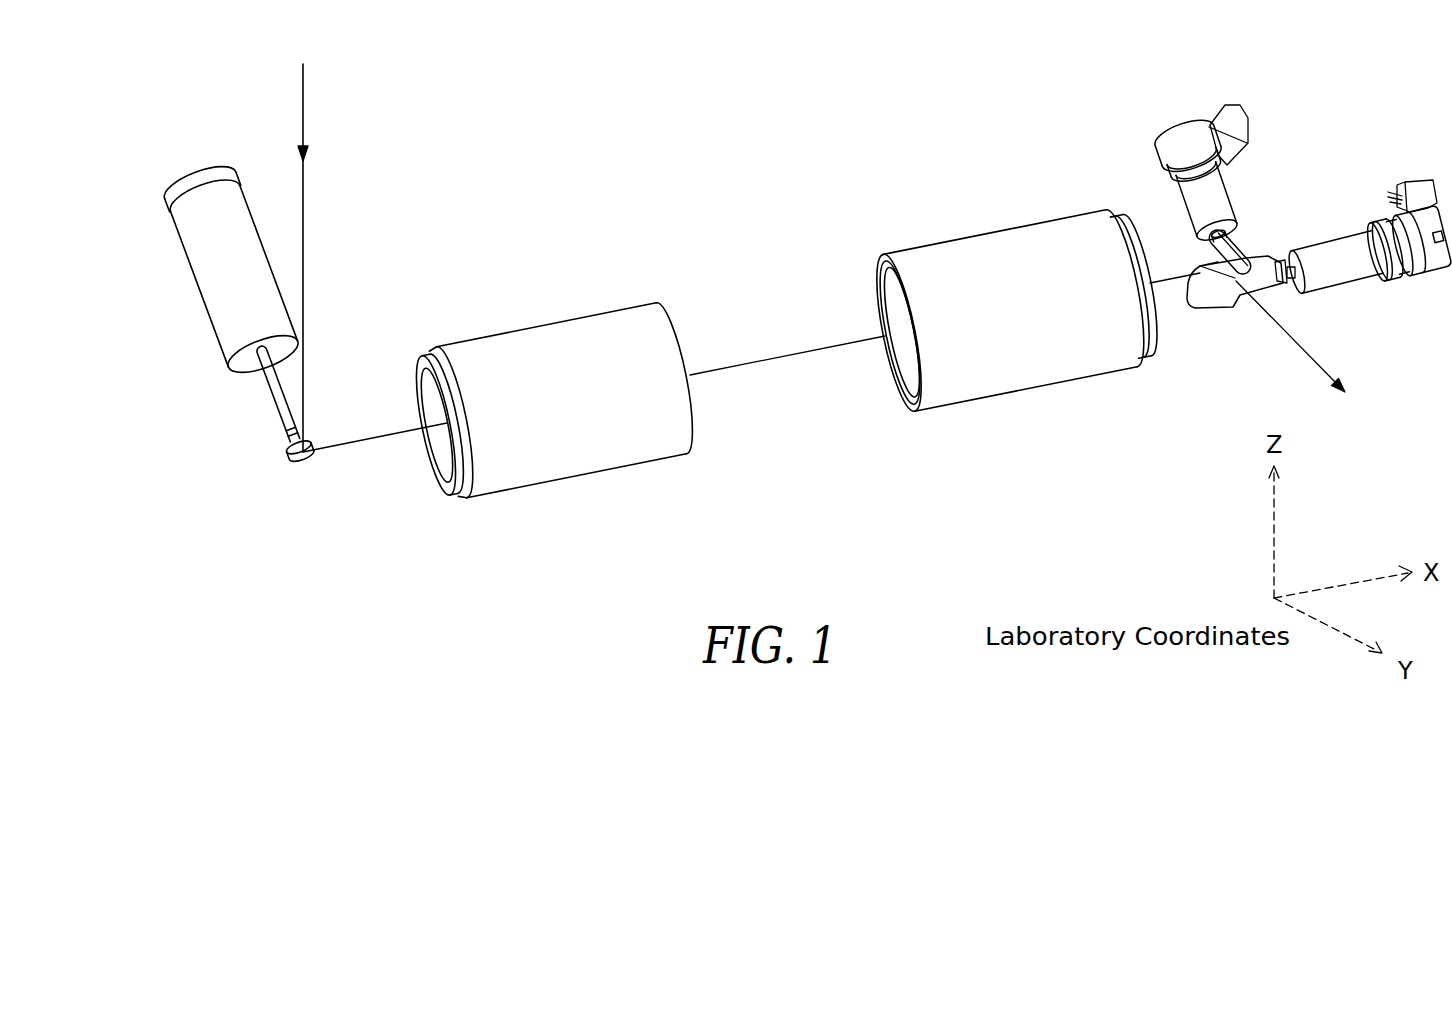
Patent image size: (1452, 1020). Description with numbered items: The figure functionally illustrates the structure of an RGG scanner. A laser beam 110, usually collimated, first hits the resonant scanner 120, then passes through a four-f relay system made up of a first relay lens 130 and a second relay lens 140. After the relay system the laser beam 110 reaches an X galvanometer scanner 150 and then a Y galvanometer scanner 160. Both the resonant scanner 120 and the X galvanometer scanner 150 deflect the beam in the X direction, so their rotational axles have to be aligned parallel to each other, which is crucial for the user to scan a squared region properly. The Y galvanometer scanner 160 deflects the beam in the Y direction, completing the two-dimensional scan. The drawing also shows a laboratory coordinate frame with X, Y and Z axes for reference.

The laser beam 110 is at (303, 124).
The resonant scanner 120 is at (202, 303).
The first relay lens 130 is at (577, 468).
The second relay lens 140 is at (1028, 373).
The X galvanometer scanner 150 is at (1215, 188).
The Y galvanometer scanner 160 is at (1340, 242).